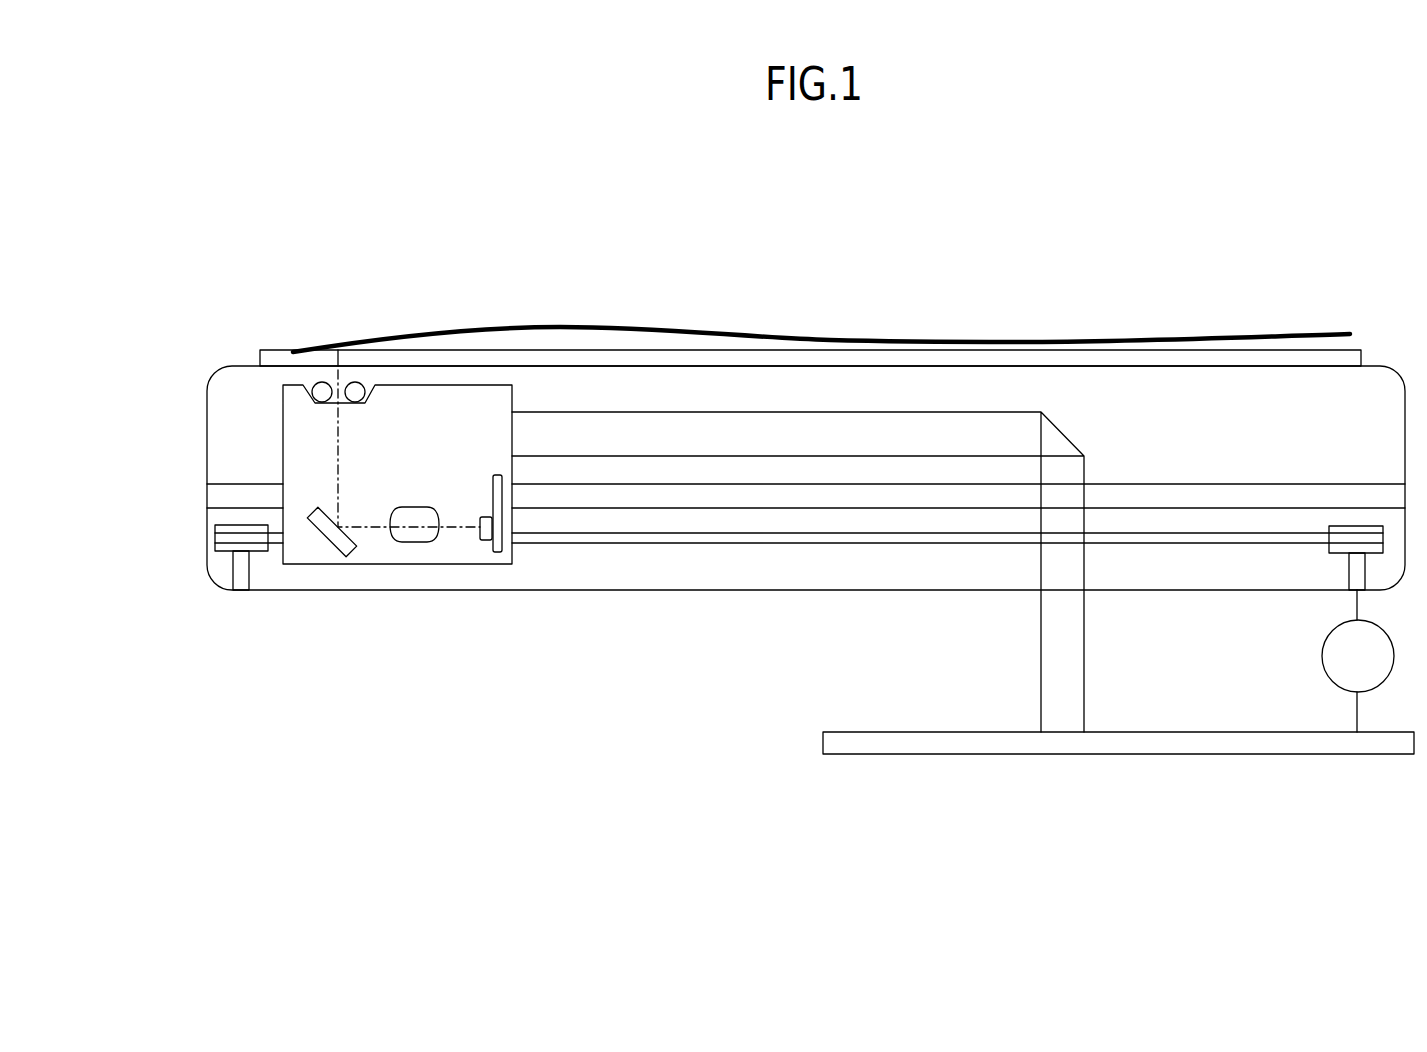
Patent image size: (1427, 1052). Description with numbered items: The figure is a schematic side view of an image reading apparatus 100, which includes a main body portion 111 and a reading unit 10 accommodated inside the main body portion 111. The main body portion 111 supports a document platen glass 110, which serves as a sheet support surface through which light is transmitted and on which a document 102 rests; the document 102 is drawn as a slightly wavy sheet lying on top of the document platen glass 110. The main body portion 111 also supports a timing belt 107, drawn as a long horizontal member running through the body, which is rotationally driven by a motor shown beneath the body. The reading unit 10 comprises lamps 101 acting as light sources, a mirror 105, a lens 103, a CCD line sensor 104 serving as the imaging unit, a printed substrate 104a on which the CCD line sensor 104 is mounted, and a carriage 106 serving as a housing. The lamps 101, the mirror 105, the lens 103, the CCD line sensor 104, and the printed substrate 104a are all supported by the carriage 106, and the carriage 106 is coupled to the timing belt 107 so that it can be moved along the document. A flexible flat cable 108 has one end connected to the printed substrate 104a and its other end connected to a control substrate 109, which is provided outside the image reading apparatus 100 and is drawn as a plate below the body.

The image reading apparatus 100 is at (895, 247).
The reading unit 10 is at (262, 426).
The lamps 101 is at (323, 382).
The document 102 is at (662, 330).
The lens 103 is at (408, 543).
The CCD line sensor 104 is at (487, 541).
The printed substrate 104a is at (500, 553).
The mirror 105 is at (323, 540).
The carriage 106 is at (368, 564).
The timing belt 107 is at (1197, 544).
The flexible flat cable 108 is at (827, 438).
The control substrate 109 is at (933, 732).
The document platen glass 110 is at (967, 358).
The main body portion 111 is at (217, 367).